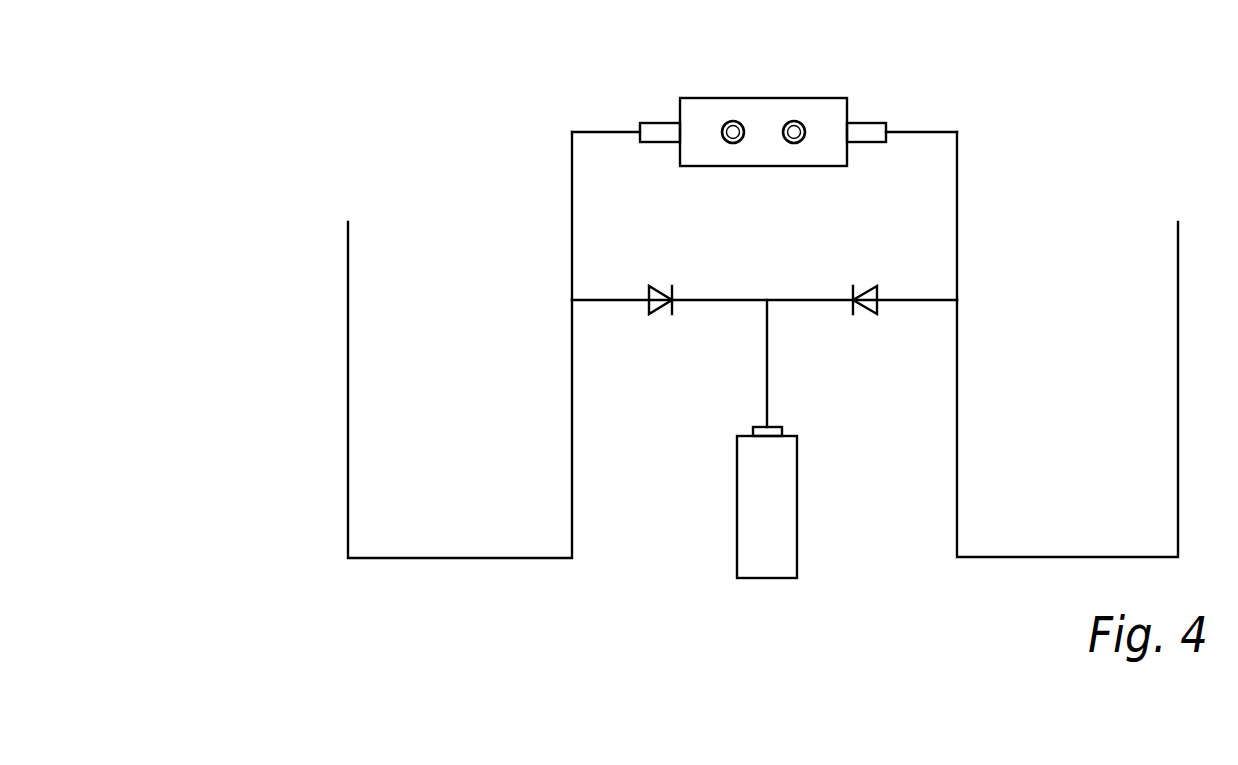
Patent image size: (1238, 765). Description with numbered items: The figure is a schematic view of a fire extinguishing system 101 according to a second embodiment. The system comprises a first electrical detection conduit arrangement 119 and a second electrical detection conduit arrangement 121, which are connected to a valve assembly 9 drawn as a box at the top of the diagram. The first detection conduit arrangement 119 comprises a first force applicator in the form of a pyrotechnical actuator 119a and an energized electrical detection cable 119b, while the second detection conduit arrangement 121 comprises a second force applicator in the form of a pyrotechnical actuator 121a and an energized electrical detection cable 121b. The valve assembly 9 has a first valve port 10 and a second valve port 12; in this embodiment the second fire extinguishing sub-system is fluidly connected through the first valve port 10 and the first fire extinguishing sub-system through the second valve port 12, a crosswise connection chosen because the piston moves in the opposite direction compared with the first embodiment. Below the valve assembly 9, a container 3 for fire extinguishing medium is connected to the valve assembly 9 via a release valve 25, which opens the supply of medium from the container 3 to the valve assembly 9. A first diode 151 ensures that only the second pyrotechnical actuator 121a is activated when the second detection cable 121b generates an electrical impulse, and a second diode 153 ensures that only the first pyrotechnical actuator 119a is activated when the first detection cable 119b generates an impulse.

The fire extinguishing system 101 is at (544, 68).
The first electrical detection conduit arrangement 119 is at (563, 198).
The pyrotechnical actuator 119a is at (662, 123).
The energized electrical detection cable 119b is at (348, 353).
The second electrical detection conduit arrangement 121 is at (966, 236).
The pyrotechnical actuator 121a is at (867, 123).
The energized electrical detection cable 121b is at (1178, 307).
The valve assembly 9 is at (768, 167).
The first valve port 10 is at (738, 121).
The second valve port 12 is at (803, 121).
The first diode 151 is at (657, 327).
The second diode 153 is at (867, 330).
The release valve 25 is at (752, 433).
The container 3 is at (798, 512).